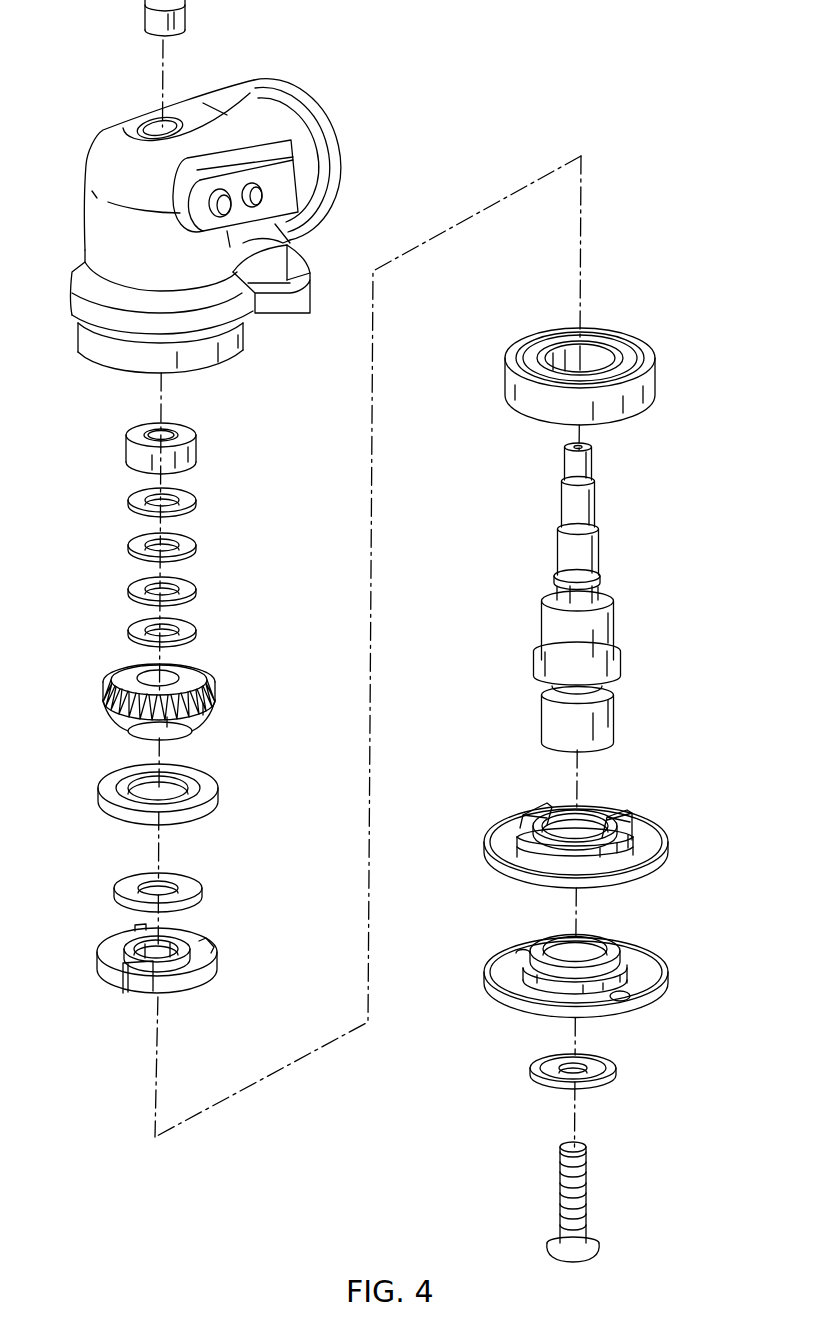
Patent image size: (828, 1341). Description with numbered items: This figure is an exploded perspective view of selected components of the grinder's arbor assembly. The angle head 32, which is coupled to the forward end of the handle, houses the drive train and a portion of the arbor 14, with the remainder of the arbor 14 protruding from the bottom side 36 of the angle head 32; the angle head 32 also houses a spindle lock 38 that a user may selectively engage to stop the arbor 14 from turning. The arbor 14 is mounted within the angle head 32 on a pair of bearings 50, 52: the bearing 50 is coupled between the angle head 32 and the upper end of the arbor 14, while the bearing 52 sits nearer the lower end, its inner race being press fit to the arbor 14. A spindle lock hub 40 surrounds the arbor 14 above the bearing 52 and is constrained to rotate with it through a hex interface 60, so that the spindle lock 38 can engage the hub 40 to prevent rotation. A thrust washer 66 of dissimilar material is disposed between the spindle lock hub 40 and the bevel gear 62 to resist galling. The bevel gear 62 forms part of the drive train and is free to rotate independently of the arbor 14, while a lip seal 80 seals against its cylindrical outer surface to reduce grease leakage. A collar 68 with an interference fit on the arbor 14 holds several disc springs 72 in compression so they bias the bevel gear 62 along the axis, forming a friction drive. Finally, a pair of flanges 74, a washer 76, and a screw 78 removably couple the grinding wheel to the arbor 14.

The arbor 14 is at (580, 504).
The angle head 32 is at (103, 229).
The bottom side 36 is at (110, 372).
The spindle lock 38 is at (300, 266).
The spindle lock hub 40 is at (115, 943).
The bearing 50 is at (146, 20).
The bearing 52 is at (640, 385).
The hex interface 60 is at (608, 575).
The bevel gear 62 is at (104, 712).
The thrust washer 66 is at (116, 893).
The collar 68 is at (128, 448).
The disc springs 72 is at (128, 500).
The flanges 74 is at (650, 838).
The washer 76 is at (612, 1072).
The screw 78 is at (580, 1206).
The lip seal 80 is at (100, 790).